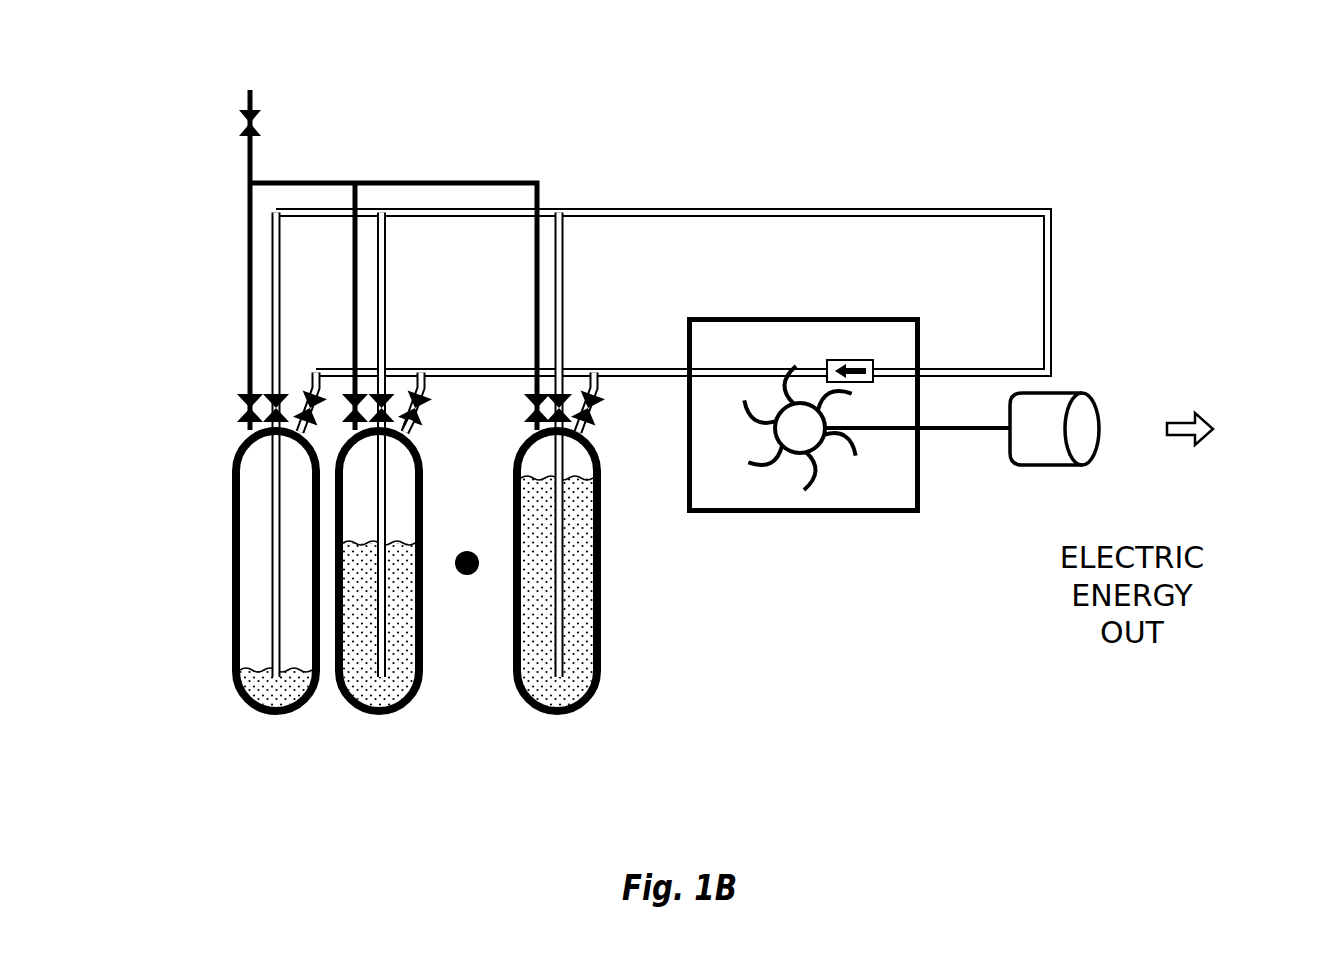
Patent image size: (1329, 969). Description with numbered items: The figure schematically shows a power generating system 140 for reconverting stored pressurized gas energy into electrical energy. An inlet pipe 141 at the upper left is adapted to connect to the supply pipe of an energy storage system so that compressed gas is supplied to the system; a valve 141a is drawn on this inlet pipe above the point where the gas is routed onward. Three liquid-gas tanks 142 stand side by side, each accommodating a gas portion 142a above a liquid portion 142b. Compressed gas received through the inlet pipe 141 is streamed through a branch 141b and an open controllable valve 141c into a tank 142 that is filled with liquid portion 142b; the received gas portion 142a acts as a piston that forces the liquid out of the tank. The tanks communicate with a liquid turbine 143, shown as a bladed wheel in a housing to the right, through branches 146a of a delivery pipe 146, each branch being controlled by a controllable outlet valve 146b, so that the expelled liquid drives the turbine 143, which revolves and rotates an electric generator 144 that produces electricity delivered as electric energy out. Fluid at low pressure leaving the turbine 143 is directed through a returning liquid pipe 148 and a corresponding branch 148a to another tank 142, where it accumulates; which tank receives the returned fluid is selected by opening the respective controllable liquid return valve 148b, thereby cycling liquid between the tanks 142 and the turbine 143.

The power generating system 140 is at (1245, 148).
The inlet pipe 141 is at (248, 97).
The inlet valve 141a is at (245, 132).
The branch 141b is at (248, 225).
The controllable valve 141c is at (240, 407).
The liquid-gas tanks 142 is at (327, 611).
The gas portion 142a is at (252, 571).
The liquid portion 142b is at (253, 685).
The liquid turbine 143 is at (802, 514).
The electric generator 144 is at (1097, 404).
The delivery pipe 146 is at (1057, 297).
The branches of delivery pipe 146a is at (283, 635).
The controllable outlet valves 146b is at (390, 398).
The returning liquid pipe 148 is at (597, 372).
The branches of returning liquid pipe 148a is at (417, 432).
The controllable liquid return valves 148b is at (297, 412).